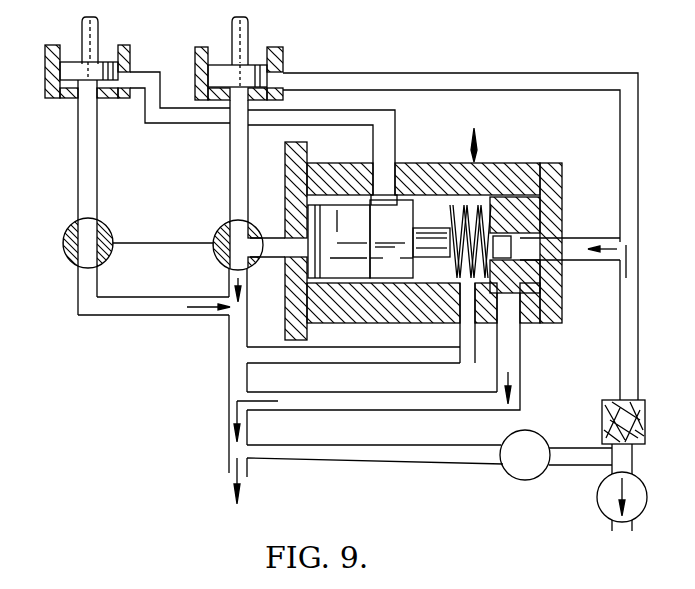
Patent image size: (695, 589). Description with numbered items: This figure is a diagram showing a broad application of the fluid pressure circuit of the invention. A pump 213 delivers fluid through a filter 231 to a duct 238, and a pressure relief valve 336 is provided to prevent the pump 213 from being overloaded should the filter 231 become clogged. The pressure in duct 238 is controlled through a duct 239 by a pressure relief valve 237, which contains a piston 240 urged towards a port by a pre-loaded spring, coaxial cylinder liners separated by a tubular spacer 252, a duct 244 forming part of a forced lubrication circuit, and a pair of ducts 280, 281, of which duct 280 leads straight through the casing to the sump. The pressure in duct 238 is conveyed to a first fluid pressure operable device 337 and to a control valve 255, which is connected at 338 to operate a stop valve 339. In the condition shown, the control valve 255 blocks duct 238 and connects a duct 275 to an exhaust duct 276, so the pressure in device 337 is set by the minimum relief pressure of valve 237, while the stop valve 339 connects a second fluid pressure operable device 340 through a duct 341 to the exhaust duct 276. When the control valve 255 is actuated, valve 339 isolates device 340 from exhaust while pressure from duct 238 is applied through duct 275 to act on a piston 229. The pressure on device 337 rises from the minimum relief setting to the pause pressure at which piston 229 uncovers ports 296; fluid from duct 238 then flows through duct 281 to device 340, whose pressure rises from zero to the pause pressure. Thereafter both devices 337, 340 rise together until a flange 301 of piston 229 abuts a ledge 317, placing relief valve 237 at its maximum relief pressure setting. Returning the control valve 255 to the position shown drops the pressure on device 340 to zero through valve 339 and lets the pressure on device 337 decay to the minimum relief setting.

The pump 213 is at (602, 501).
The piston 229 is at (391, 239).
The filter 231 is at (601, 413).
The pressure relief valve 237 is at (482, 130).
The duct 238 is at (232, 160).
The duct 239 is at (583, 262).
The piston 240 is at (509, 205).
The duct 244 is at (448, 407).
The tubular spacer 252 is at (445, 283).
The control valve 255 is at (221, 258).
The duct 275 is at (280, 237).
The exhaust duct 276 is at (228, 373).
The duct 280 is at (389, 358).
The duct 281 is at (396, 125).
The ports 296 is at (384, 283).
The flange 301 is at (338, 165).
The ledge 317 is at (342, 280).
The pressure relief valve 336 is at (507, 465).
The first fluid pressure operable device 337 is at (257, 64).
The connection 338 is at (160, 243).
The stop valve 339 is at (66, 236).
The second fluid pressure operable device 340 is at (107, 62).
The duct 341 is at (122, 310).